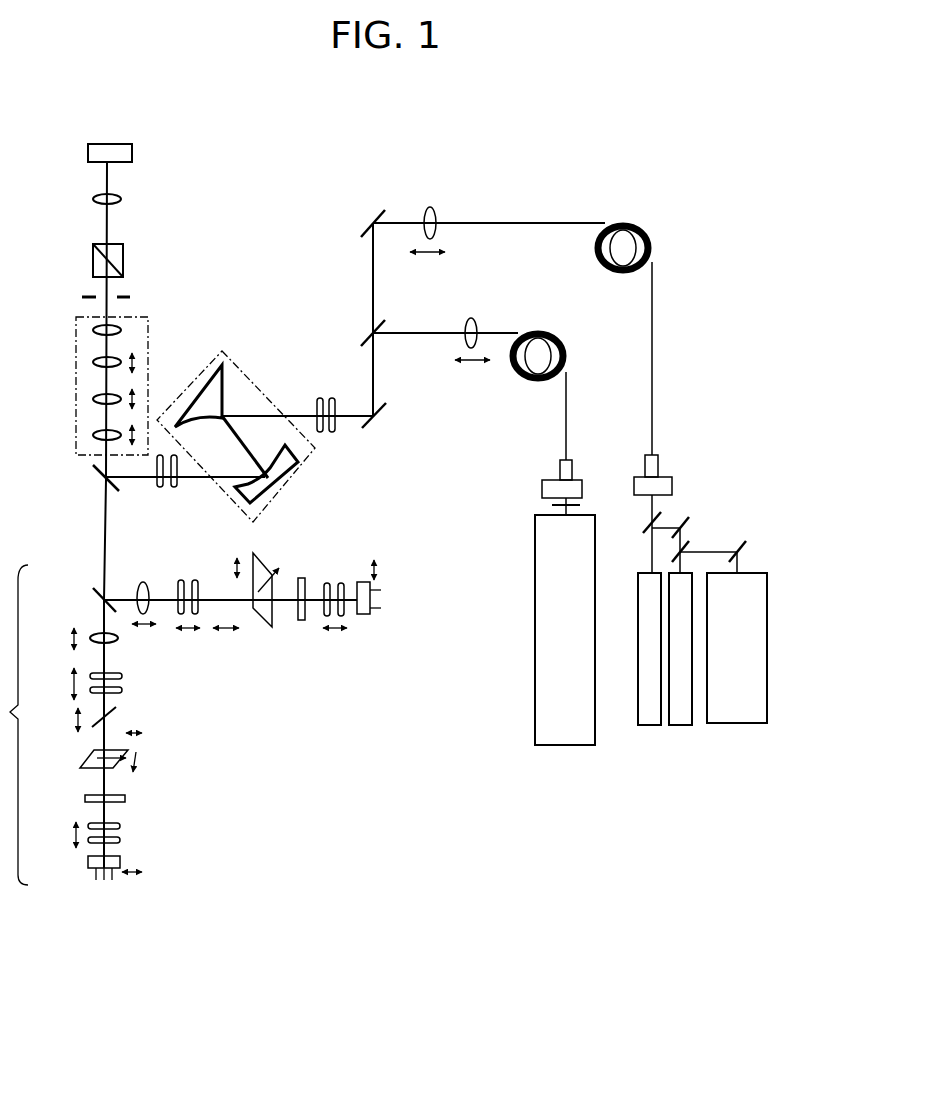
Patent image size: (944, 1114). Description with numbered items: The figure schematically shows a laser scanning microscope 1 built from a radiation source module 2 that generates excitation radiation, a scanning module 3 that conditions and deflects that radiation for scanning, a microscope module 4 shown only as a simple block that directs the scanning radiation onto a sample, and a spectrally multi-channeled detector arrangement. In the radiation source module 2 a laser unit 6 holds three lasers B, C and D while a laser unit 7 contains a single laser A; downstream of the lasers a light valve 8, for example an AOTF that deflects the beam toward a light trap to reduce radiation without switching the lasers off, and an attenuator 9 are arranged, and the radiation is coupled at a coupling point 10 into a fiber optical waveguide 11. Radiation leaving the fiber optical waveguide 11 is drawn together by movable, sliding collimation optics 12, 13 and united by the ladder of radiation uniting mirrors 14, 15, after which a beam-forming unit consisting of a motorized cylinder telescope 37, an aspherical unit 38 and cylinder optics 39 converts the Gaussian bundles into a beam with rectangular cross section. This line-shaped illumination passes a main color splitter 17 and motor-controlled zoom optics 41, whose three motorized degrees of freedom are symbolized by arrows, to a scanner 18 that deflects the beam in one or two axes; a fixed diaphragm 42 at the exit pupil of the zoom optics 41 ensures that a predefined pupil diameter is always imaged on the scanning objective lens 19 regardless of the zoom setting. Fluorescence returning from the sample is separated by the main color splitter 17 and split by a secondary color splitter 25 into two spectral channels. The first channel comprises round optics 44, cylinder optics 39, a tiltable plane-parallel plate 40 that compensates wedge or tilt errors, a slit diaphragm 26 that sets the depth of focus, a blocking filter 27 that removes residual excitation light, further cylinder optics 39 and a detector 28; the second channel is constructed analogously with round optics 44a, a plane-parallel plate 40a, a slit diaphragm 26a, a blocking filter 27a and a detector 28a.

The laser scanning microscope 1 is at (400, 870).
The radiation source module 2 is at (783, 787).
The scanning module 3 is at (453, 152).
The microscope module 4 is at (88, 155).
The laser unit 6 is at (774, 740).
The laser unit 7 is at (535, 722).
The light valve 8 is at (660, 500).
The attenuator 9 is at (672, 487).
The coupling point 10 is at (658, 462).
The fiber optical waveguide 11 is at (653, 395).
The collimation optics 12 is at (434, 208).
The collimation optics 13 is at (475, 318).
The radiation uniting mirror 14 is at (368, 226).
The radiation uniting mirror 15 is at (370, 332).
The main color splitter 17 is at (98, 478).
The scanner 18 is at (93, 258).
The scanning objective lens 19 is at (121, 197).
The secondary color splitter 25 is at (92, 594).
The slit diaphragm 26 is at (265, 627).
The slit diaphragm 26a is at (138, 752).
The blocking filter 27 is at (300, 622).
The blocking filter 27a is at (125, 798).
The detector 28 is at (365, 616).
The detector 28a is at (90, 870).
The cylinder telescope 37 is at (340, 386).
The aspherical unit 38 is at (298, 478).
The cylinder optics 39 is at (182, 498).
The plane-parallel plate 40 is at (230, 618).
The plane-parallel plate 40a is at (112, 716).
The zoom optics 41 is at (76, 405).
The fixed diaphragm 42 is at (126, 296).
The round optics 44 is at (143, 584).
The round optics 44a is at (118, 640).